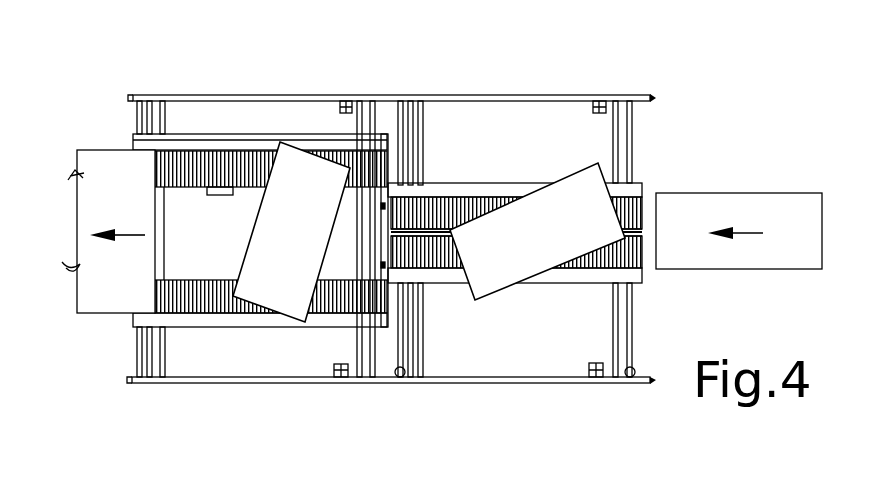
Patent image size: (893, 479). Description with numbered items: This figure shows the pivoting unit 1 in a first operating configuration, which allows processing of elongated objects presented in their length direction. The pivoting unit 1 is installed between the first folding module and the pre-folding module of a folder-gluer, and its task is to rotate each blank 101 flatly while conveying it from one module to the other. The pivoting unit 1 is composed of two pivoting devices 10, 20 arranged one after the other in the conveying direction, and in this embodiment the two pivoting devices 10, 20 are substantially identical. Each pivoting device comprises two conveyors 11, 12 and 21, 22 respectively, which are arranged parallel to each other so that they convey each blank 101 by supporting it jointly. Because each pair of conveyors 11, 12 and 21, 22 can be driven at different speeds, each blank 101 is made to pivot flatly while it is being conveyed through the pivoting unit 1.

The pivoting unit 1 is at (664, 82).
The pivoting device 10 is at (546, 88).
The conveyor 11 is at (437, 257).
The conveyor 12 is at (447, 203).
The pivoting device 20 is at (274, 90).
The conveyor 21 is at (200, 297).
The conveyor 22 is at (200, 168).
The blank 101 is at (728, 210).